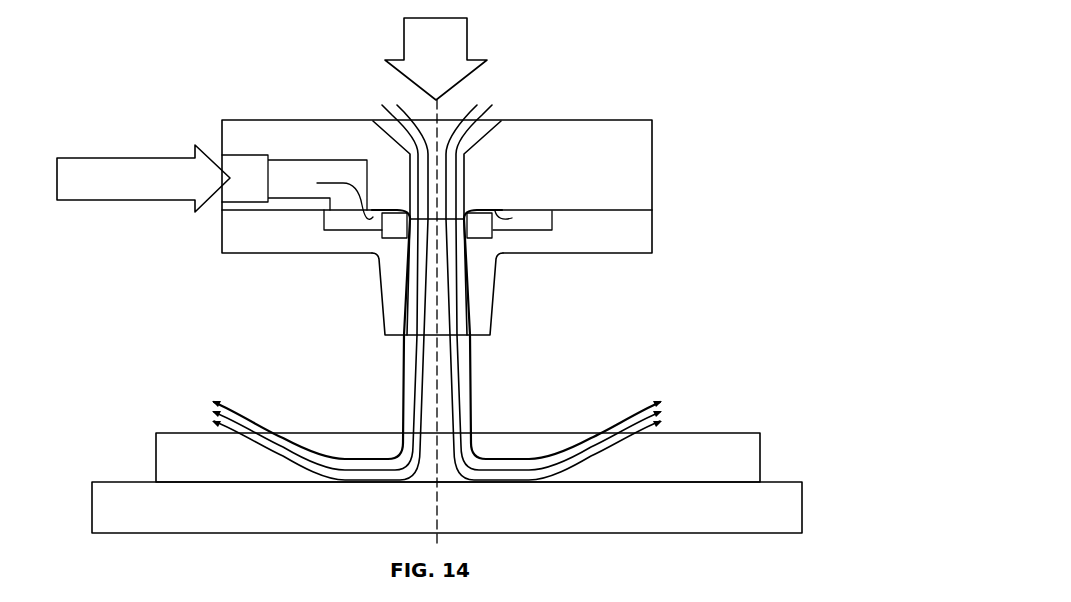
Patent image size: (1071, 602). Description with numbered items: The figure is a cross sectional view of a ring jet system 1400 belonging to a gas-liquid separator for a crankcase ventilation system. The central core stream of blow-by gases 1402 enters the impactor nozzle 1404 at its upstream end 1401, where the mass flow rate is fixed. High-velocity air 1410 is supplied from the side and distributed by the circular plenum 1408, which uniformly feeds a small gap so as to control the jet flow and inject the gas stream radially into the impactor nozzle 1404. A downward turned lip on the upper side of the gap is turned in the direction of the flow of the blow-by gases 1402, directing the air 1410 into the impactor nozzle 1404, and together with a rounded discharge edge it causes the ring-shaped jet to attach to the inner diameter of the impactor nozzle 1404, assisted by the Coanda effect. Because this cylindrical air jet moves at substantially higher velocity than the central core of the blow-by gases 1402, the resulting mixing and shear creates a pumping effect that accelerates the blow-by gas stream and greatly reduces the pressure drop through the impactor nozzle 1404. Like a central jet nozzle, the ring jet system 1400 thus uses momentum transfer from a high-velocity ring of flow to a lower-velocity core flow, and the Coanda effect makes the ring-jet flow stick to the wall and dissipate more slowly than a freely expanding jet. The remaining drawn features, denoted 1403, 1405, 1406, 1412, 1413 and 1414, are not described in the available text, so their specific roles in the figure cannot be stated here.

The ring jet system 1400 is at (236, 50).
The upstream end of the impactor nozzle 1401 is at (471, 185).
The blow-by gases 1402 is at (455, 40).
The fiber bundle 1403 is at (391, 342).
The impactor nozzle 1404 is at (490, 268).
The housing block 1405 is at (630, 233).
The substrate board 1406 is at (695, 442).
The circular plenum 1408 is at (342, 226).
The air 1410 is at (130, 196).
The fiber center axis 1412 is at (438, 402).
The clamp block 1413 is at (467, 241).
The fiber bend shoulder 1414 is at (472, 208).